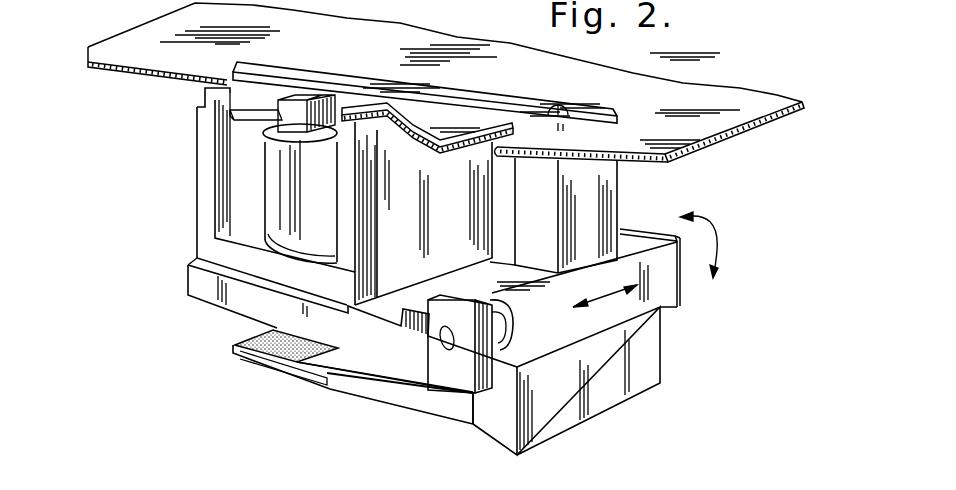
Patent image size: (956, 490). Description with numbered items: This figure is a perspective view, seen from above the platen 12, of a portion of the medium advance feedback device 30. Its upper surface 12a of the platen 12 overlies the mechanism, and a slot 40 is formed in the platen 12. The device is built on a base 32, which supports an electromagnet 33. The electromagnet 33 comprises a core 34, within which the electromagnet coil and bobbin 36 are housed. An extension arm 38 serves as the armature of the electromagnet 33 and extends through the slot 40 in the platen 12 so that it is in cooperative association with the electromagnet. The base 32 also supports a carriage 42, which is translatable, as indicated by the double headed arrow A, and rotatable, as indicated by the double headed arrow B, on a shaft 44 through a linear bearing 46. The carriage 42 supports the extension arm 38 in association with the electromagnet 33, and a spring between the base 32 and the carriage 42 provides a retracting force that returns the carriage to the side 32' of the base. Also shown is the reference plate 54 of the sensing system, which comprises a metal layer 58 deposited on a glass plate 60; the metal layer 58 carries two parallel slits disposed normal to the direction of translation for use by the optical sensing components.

The platen 12 is at (804, 110).
The upper surface of support plate 12a is at (693, 97).
The medium advance feedback device 30 is at (687, 286).
The base 32 is at (326, 325).
The side of the base 32' is at (436, 421).
The electromagnet 33 is at (190, 200).
The core 34 is at (406, 208).
The electromagnet coil and bobbin 36 is at (313, 200).
The extension arm 38 is at (293, 73).
The slot 40 is at (480, 130).
The carriage 42 is at (607, 400).
The shaft 44 is at (495, 347).
The linear bearing 46 is at (503, 338).
The reference plate 54 is at (240, 362).
The metal layer 58 is at (273, 352).
The glass plate 60 is at (290, 368).
The double headed arrow A is at (597, 292).
The double headed arrow B is at (718, 224).